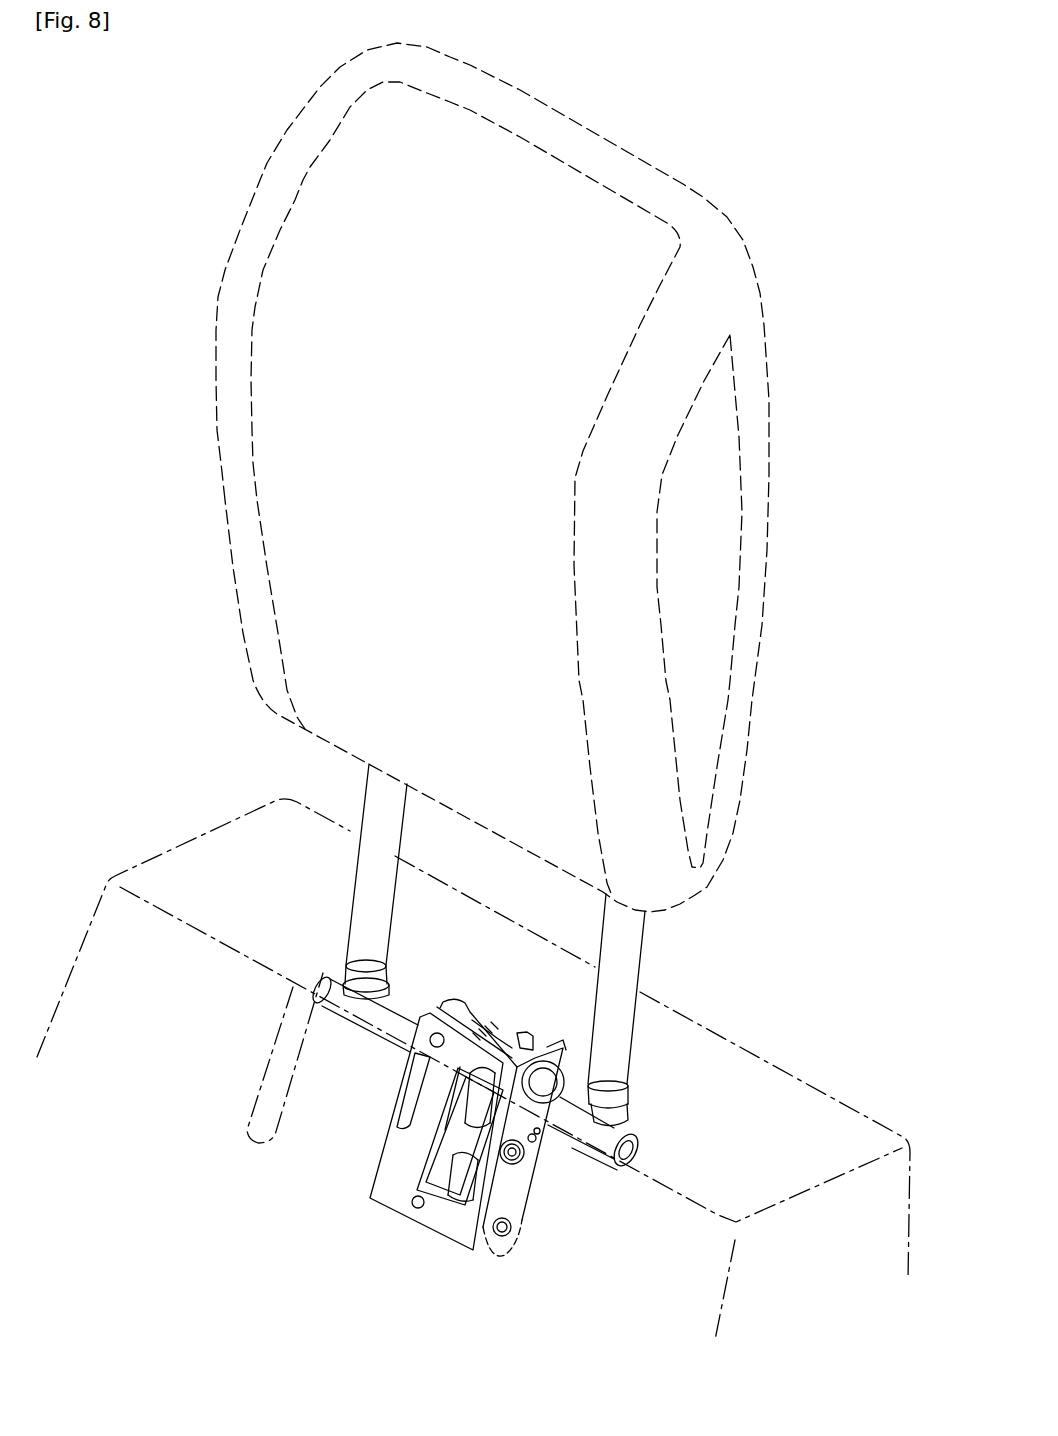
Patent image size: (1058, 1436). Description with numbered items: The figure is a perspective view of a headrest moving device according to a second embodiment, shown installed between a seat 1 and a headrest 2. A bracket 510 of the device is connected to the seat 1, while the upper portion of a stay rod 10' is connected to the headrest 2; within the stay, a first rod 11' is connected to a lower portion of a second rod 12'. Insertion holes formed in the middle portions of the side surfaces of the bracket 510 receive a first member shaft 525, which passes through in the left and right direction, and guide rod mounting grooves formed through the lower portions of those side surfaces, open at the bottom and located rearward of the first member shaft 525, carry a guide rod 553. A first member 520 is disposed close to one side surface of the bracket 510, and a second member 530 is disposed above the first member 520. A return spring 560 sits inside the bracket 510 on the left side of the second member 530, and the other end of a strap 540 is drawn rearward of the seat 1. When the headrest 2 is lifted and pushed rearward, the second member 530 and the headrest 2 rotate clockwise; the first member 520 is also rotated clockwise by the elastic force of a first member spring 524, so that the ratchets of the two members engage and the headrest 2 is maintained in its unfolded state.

The seat 1 is at (828, 1117).
The headrest 2 is at (703, 222).
The stay rod 10' is at (285, 881).
The first rod 11' is at (521, 1072).
The second rod 12' is at (676, 1010).
The bracket 510 is at (395, 1198).
The first member 520 is at (477, 1190).
The first member spring 524 is at (470, 1145).
The first member shaft 525 is at (455, 1118).
The second member 530 is at (500, 1110).
The strap 540 is at (447, 1183).
The guide rod 553 is at (503, 1233).
The return spring 560 is at (477, 1038).